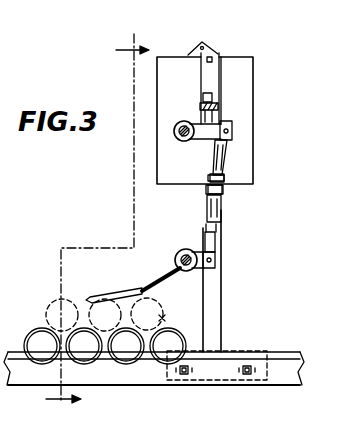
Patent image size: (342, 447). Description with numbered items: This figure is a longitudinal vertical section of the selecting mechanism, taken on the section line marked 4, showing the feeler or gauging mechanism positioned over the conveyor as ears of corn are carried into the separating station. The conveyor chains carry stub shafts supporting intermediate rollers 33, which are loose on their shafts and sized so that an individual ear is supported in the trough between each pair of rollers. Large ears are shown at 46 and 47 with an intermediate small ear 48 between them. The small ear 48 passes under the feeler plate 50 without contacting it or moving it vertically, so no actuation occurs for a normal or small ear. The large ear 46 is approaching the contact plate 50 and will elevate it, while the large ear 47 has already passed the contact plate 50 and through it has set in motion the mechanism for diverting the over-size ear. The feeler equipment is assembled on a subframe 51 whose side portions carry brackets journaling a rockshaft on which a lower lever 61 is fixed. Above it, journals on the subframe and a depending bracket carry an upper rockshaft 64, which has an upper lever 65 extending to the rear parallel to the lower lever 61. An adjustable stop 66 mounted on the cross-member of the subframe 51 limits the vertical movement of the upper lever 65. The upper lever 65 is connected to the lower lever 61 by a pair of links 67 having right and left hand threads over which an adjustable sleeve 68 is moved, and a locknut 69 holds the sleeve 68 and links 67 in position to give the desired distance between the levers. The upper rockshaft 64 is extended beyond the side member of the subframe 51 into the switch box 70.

The section line 4- 4 is at (89, 223).
The intermediate rollers 33 is at (172, 341).
The large ear 46 is at (163, 318).
The large ear 47 is at (53, 313).
The small ear 48 is at (105, 297).
The feeler plate 50 is at (180, 256).
The subframe 51 is at (217, 272).
The lower lever 61 is at (203, 268).
The upper rockshaft 64 is at (177, 124).
The upper lever 65 is at (224, 121).
The adjustable stop 66 is at (216, 121).
The links 67 is at (222, 210).
The adjustable sleeve 68 is at (212, 187).
The locknut 69 is at (210, 176).
The switch box 70 is at (176, 70).